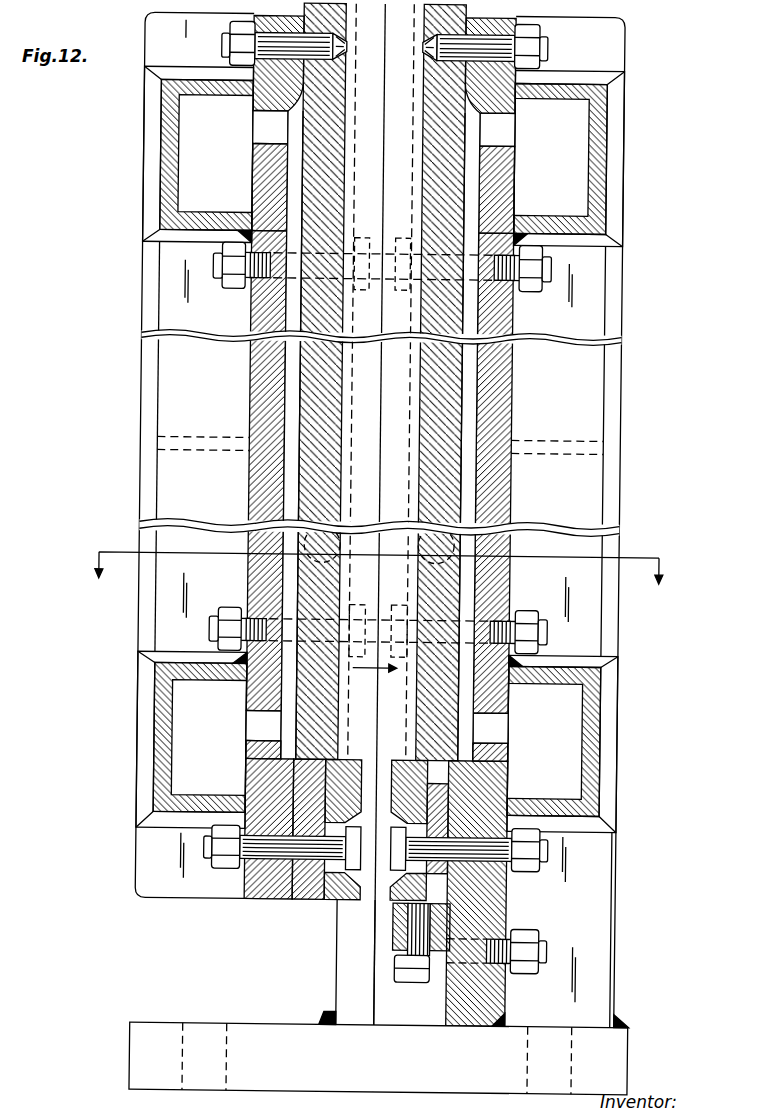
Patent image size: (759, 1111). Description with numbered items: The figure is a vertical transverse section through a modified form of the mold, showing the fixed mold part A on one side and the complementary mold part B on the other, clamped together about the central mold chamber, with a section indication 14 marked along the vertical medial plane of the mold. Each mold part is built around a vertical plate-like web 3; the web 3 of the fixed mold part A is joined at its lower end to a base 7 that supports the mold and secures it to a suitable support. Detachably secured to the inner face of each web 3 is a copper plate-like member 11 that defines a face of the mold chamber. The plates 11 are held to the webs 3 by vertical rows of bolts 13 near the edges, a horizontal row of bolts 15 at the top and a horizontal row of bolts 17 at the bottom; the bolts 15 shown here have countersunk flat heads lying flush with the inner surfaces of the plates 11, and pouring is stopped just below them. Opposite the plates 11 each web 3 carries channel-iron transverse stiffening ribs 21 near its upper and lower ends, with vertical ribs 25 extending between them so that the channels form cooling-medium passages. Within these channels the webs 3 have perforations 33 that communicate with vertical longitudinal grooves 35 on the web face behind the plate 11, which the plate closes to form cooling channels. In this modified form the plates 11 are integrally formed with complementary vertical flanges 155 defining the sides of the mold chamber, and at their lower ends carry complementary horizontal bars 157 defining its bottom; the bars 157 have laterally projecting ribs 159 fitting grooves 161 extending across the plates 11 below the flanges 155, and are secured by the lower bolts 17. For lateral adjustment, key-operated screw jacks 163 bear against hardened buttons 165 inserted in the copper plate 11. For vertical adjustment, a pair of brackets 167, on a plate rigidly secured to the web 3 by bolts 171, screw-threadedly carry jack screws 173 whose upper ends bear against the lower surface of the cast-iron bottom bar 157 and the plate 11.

The web 3 is at (254, 385).
The base 7 is at (273, 1025).
The plate-like member 11 is at (346, 193).
The bolts 13 is at (232, 278).
The section arrow 14 is at (348, 887).
The bolts 15 is at (345, 42).
The bolts 17 is at (270, 868).
The transverse stiffening rib 21 is at (216, 84).
The vertical ribs 25 is at (162, 305).
The perforations 33 is at (254, 128).
The vertical longitudinal grooves 35 is at (300, 421).
The vertical flanges 155 is at (345, 163).
The horizontal bars 157 is at (360, 757).
The laterally projecting ribs 159 is at (327, 770).
The grooves 161 is at (275, 749).
The key-operated screw jacks 163 is at (342, 530).
The hardened buttons 165 is at (366, 605).
The brackets 167 is at (415, 925).
The bolts 171 is at (538, 952).
The jack screws 173 is at (415, 982).
The fixed mold part A is at (625, 142).
The complementary mold part B is at (145, 150).